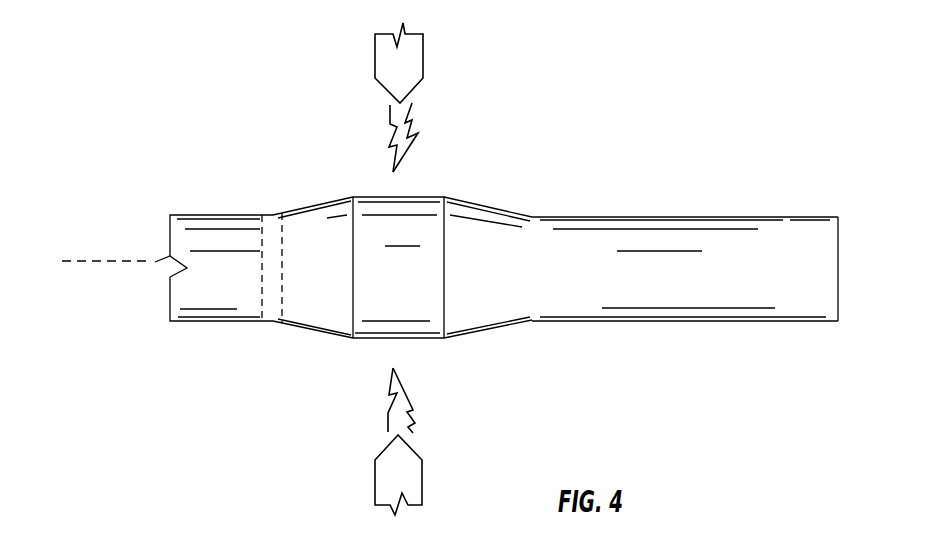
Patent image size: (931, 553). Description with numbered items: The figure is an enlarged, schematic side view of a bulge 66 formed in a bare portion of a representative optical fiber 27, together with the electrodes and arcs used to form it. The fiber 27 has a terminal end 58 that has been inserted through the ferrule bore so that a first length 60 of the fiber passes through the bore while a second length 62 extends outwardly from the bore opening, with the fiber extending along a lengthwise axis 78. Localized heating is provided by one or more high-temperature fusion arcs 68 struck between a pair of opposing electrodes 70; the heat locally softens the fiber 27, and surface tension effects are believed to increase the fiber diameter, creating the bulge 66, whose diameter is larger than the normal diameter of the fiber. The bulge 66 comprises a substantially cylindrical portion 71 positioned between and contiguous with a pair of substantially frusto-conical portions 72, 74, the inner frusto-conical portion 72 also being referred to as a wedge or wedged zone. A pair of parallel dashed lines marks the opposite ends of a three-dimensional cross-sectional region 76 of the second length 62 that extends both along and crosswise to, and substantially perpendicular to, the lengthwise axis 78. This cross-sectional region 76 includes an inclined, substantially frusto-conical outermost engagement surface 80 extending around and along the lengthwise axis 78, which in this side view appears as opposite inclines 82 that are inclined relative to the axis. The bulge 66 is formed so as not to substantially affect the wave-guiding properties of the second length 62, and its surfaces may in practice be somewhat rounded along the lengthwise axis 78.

The fiber 27 is at (774, 156).
The terminal end 58 is at (838, 269).
The first length 60 is at (775, 343).
The second length 62 is at (185, 372).
The bulge 66 is at (482, 163).
The fusion arc 68 is at (422, 133).
The electrode 70 is at (423, 60).
The substantially cylindrical portion 71 is at (417, 338).
The frusto-conical portion 72 is at (306, 375).
The frusto-conical portion 74 is at (520, 370).
The cross-sectional region 76 is at (252, 259).
The lengthwise axis 78 is at (92, 262).
The engagement surface 80 is at (273, 212).
The inclines 82 is at (272, 327).